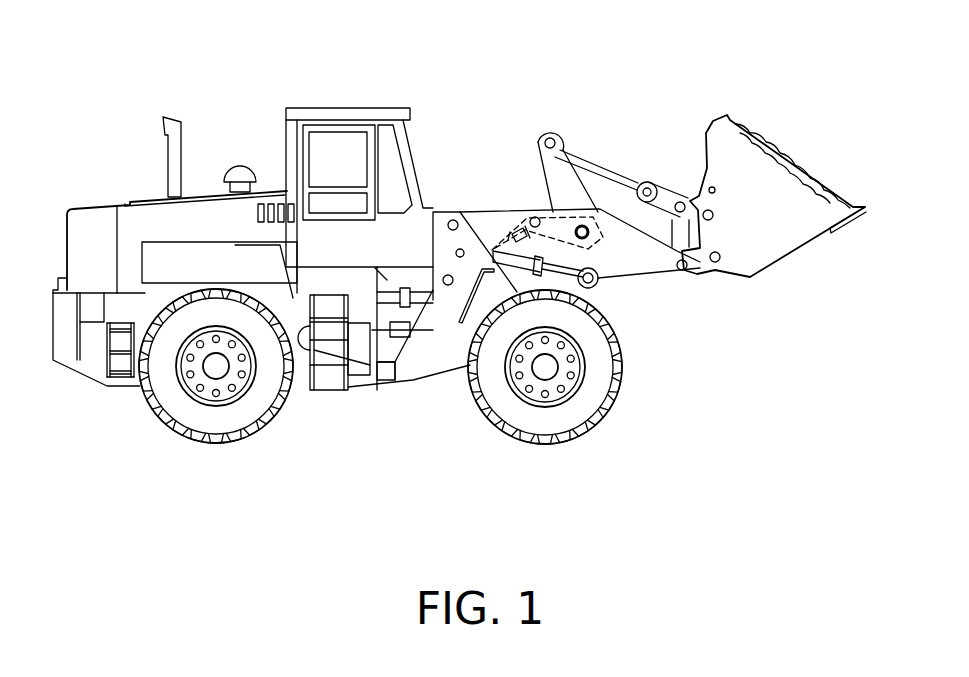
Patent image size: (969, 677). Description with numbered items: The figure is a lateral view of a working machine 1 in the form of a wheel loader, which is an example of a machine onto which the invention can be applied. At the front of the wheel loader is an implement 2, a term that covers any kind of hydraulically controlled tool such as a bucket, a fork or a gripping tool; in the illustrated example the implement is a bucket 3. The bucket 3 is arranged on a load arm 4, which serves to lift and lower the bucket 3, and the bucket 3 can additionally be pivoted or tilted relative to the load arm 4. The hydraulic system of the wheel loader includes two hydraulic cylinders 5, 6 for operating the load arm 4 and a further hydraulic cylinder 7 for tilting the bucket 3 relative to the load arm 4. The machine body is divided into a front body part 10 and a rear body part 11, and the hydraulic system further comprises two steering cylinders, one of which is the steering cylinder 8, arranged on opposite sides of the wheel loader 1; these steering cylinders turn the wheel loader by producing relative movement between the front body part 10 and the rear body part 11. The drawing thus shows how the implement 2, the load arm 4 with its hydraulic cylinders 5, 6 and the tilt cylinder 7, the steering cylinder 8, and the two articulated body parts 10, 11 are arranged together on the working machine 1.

The working machine 1 is at (346, 72).
The implement 2 is at (774, 177).
The bucket 3 is at (770, 235).
The load arm 4 is at (643, 145).
The hydraulic cylinder 5 is at (610, 308).
The hydraulic cylinder 6 is at (567, 282).
The hydraulic cylinder 7 is at (516, 225).
The steering cylinder 8 is at (432, 404).
The front body part 10 is at (418, 368).
The rear body part 11 is at (93, 358).